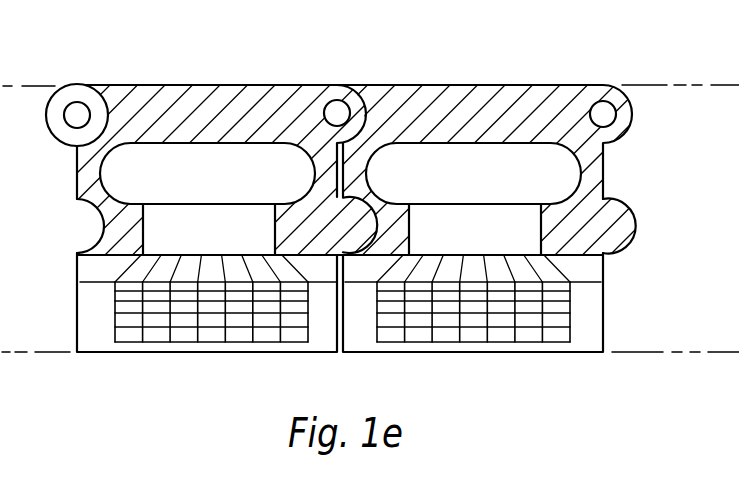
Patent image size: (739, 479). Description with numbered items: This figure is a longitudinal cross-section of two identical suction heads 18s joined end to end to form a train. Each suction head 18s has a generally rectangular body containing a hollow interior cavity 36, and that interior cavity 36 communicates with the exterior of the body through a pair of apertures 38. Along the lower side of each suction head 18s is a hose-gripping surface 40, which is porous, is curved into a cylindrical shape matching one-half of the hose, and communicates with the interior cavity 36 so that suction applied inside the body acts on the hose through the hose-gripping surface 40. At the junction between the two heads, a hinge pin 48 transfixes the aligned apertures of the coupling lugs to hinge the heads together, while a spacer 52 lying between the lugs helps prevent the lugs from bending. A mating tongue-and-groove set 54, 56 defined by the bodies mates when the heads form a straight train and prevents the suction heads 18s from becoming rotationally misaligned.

The suction head 18s is at (284, 351).
The hose-gripping surface 40 is at (190, 344).
The apertures 38 is at (218, 183).
The interior cavity 36 is at (219, 244).
The spacer 52 is at (77, 84).
The hinge pin 48 is at (337, 100).
The tongue 54 is at (96, 242).
The groove 56 is at (625, 236).